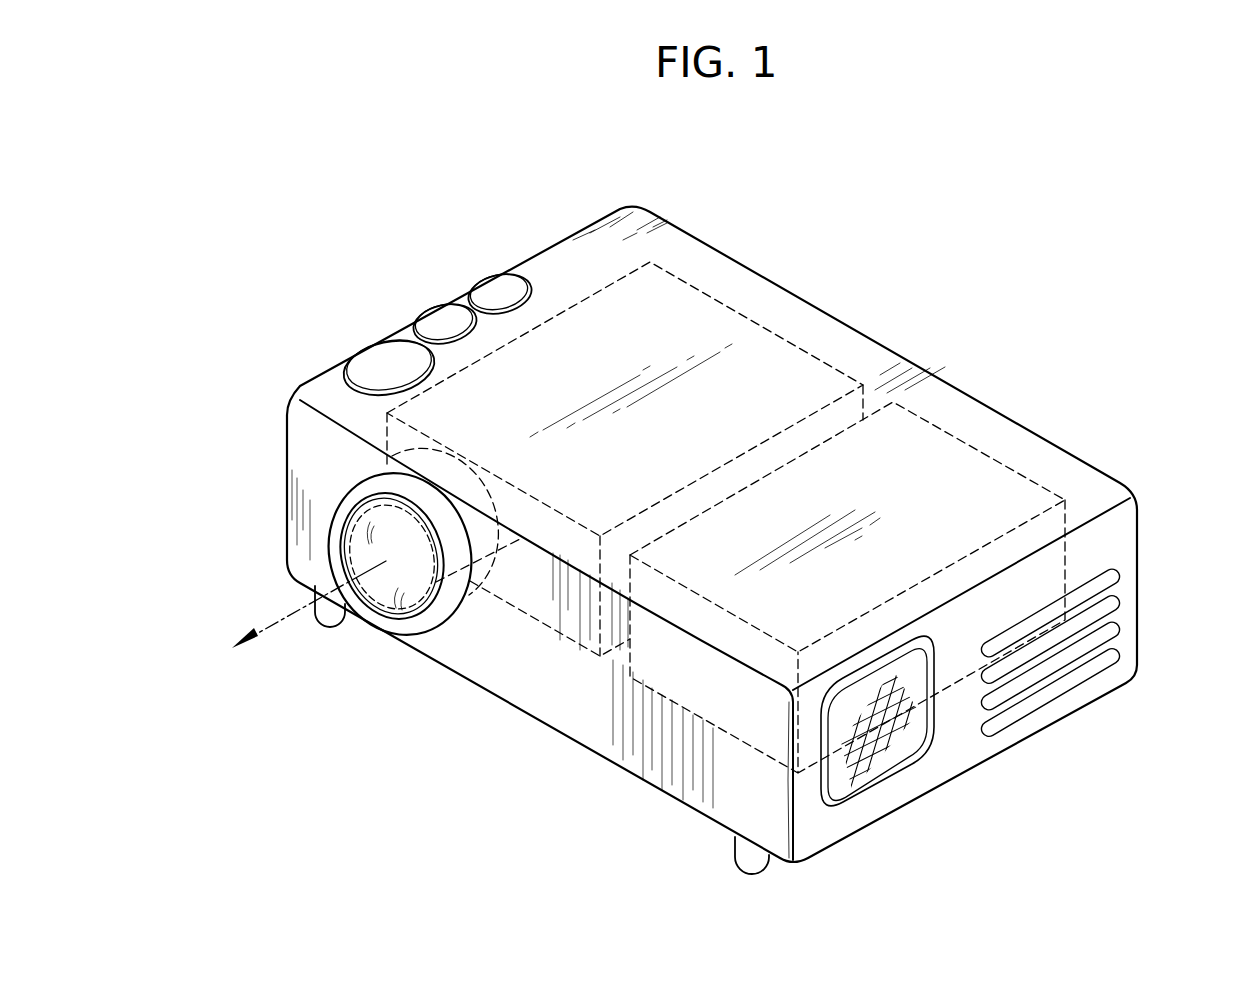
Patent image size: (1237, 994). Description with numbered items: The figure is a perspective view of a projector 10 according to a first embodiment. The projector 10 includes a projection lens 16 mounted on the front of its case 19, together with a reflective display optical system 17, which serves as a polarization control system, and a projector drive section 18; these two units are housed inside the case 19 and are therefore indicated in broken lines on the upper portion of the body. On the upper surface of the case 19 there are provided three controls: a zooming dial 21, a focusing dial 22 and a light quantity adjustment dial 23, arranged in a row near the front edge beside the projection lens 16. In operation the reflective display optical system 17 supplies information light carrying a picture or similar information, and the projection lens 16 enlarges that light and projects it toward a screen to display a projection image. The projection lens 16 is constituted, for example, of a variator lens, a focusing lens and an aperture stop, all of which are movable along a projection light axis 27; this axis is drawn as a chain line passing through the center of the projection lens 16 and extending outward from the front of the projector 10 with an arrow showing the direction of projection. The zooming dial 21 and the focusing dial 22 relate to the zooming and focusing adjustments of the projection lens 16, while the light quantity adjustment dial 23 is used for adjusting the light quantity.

The projector 10 is at (860, 248).
The projection lens 16 is at (412, 598).
The optical engine unit 17 is at (700, 288).
The power supply unit 18 is at (1003, 463).
The housing 19 is at (485, 680).
The button 21 is at (430, 323).
The button 22 is at (378, 353).
The button 23 is at (488, 287).
The projection direction 27 is at (283, 617).